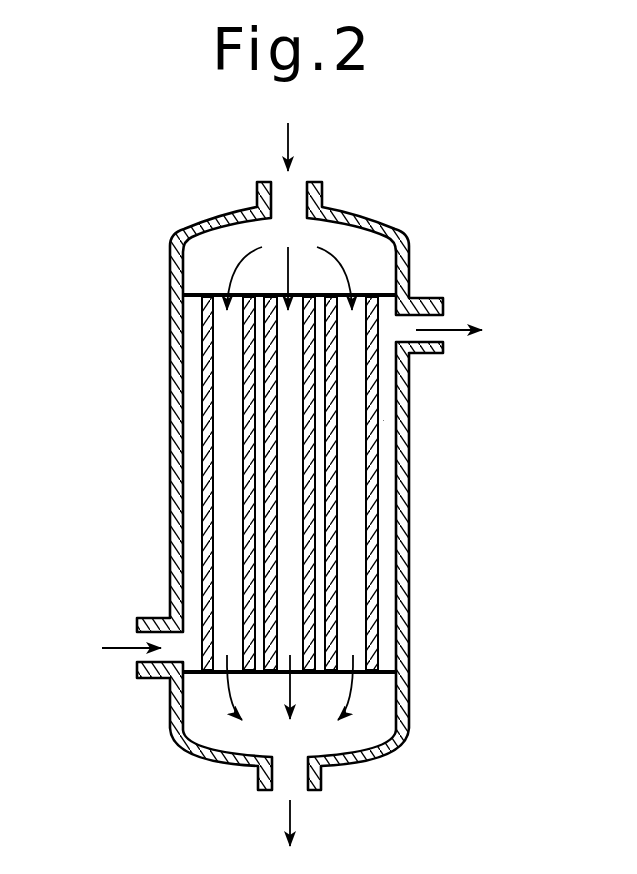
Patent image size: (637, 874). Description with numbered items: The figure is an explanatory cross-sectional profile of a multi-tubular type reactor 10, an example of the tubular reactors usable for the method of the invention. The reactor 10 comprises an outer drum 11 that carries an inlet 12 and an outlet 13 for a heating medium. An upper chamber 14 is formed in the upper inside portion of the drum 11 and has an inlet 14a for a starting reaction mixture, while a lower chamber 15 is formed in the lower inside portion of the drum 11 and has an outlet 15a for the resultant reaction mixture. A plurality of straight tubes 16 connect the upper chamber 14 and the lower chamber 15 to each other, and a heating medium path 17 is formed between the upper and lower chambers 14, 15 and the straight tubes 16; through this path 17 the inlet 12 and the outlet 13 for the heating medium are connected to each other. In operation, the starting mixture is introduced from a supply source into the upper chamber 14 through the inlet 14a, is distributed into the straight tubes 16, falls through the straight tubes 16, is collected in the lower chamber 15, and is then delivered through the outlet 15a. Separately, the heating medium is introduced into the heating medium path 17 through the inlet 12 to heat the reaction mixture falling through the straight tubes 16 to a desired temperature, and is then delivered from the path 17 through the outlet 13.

The multi-tubular type reactor 10 is at (432, 216).
The outer drum 11 is at (411, 251).
The inlet for a heating medium 12 is at (138, 640).
The outlet for a heating medium 13 is at (437, 320).
The upper chamber 14 is at (208, 242).
The inlet for a starting reaction mixture 14a is at (293, 197).
The lower chamber 15 is at (380, 708).
The outlet for a resultant reaction mixture 15a is at (293, 782).
The straight tubes 16 is at (371, 382).
The heating medium path 17 is at (384, 420).